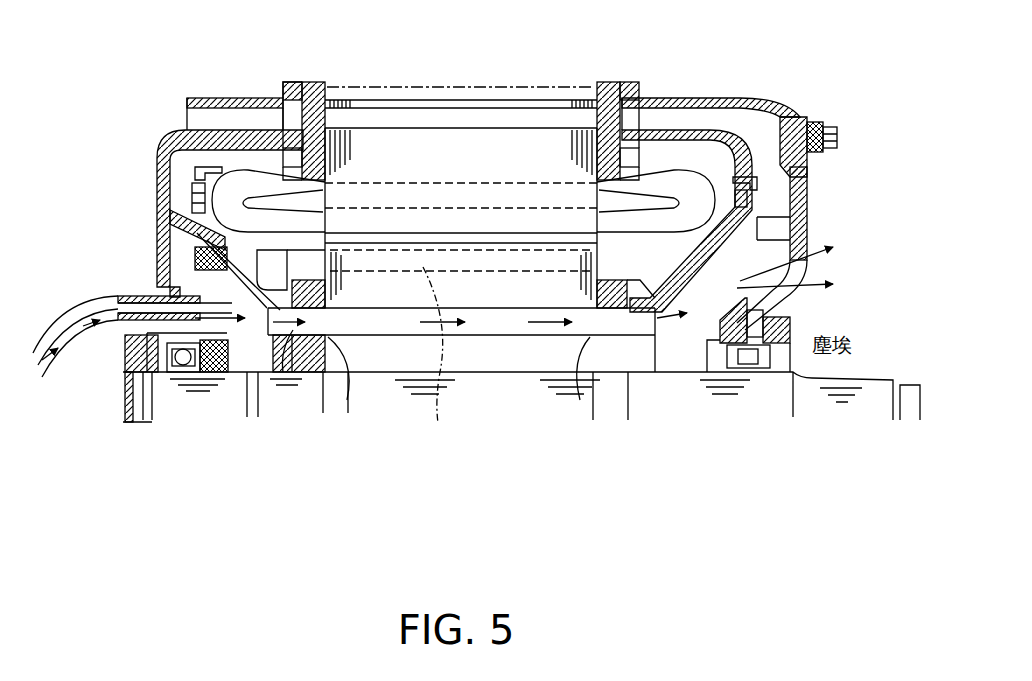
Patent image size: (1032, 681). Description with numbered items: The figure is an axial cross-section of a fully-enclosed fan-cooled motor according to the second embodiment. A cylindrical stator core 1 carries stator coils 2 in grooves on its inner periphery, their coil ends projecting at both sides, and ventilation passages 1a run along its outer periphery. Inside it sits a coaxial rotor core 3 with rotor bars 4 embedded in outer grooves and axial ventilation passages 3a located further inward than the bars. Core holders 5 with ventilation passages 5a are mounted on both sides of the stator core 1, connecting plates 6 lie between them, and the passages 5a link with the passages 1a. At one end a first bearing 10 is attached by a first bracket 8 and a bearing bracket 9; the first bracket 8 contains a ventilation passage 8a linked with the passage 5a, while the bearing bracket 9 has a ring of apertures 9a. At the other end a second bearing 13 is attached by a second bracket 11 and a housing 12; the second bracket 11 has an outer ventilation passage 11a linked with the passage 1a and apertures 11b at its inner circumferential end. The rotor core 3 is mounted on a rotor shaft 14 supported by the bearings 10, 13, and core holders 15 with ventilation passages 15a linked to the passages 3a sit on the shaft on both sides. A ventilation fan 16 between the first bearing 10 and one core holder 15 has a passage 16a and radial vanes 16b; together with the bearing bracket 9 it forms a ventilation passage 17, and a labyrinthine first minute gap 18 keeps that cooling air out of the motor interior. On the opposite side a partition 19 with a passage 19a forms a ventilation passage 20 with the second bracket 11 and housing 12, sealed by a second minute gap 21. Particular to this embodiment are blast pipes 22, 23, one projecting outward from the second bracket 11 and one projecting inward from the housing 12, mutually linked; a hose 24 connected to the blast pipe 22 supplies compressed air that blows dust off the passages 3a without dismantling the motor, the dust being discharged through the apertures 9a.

The stator core 1 is at (473, 143).
The ventilation passages 1a is at (412, 117).
The stator coils 2 is at (745, 135).
The rotor core 3 is at (530, 297).
The ventilation passages 3a is at (490, 322).
The rotor bars 4 is at (433, 361).
The core holders 5 is at (313, 117).
The ventilation passages 5a is at (293, 82).
The connecting plates 6 is at (532, 82).
The first bracket 8 is at (730, 98).
The ventilation passage 8a is at (670, 117).
The bearing bracket 9 is at (822, 235).
The apertures 9a is at (825, 272).
The first bearing 10 is at (748, 372).
The second bracket 11 is at (160, 160).
The ventilation passage 11a is at (222, 117).
The apertures 11b is at (165, 237).
The housing 12 is at (127, 348).
The second bearing 13 is at (175, 420).
The rotor shaft 14 is at (407, 400).
The core holders 15 is at (307, 420).
The ventilation passages 15a is at (333, 372).
The ventilation fan 16 is at (655, 372).
The ventilation passage 16a is at (633, 380).
The radial vanes 16b is at (808, 205).
The ventilation passage 17 is at (712, 372).
The first minute gap 18 is at (838, 135).
The partition 19 is at (252, 422).
The ventilation passage 19a is at (290, 422).
The ventilation passage 20 is at (234, 423).
The second minute gap 21 is at (200, 255).
The blast pipe 22 is at (138, 295).
The blast pipe 23 is at (212, 423).
The hose 24 is at (63, 373).